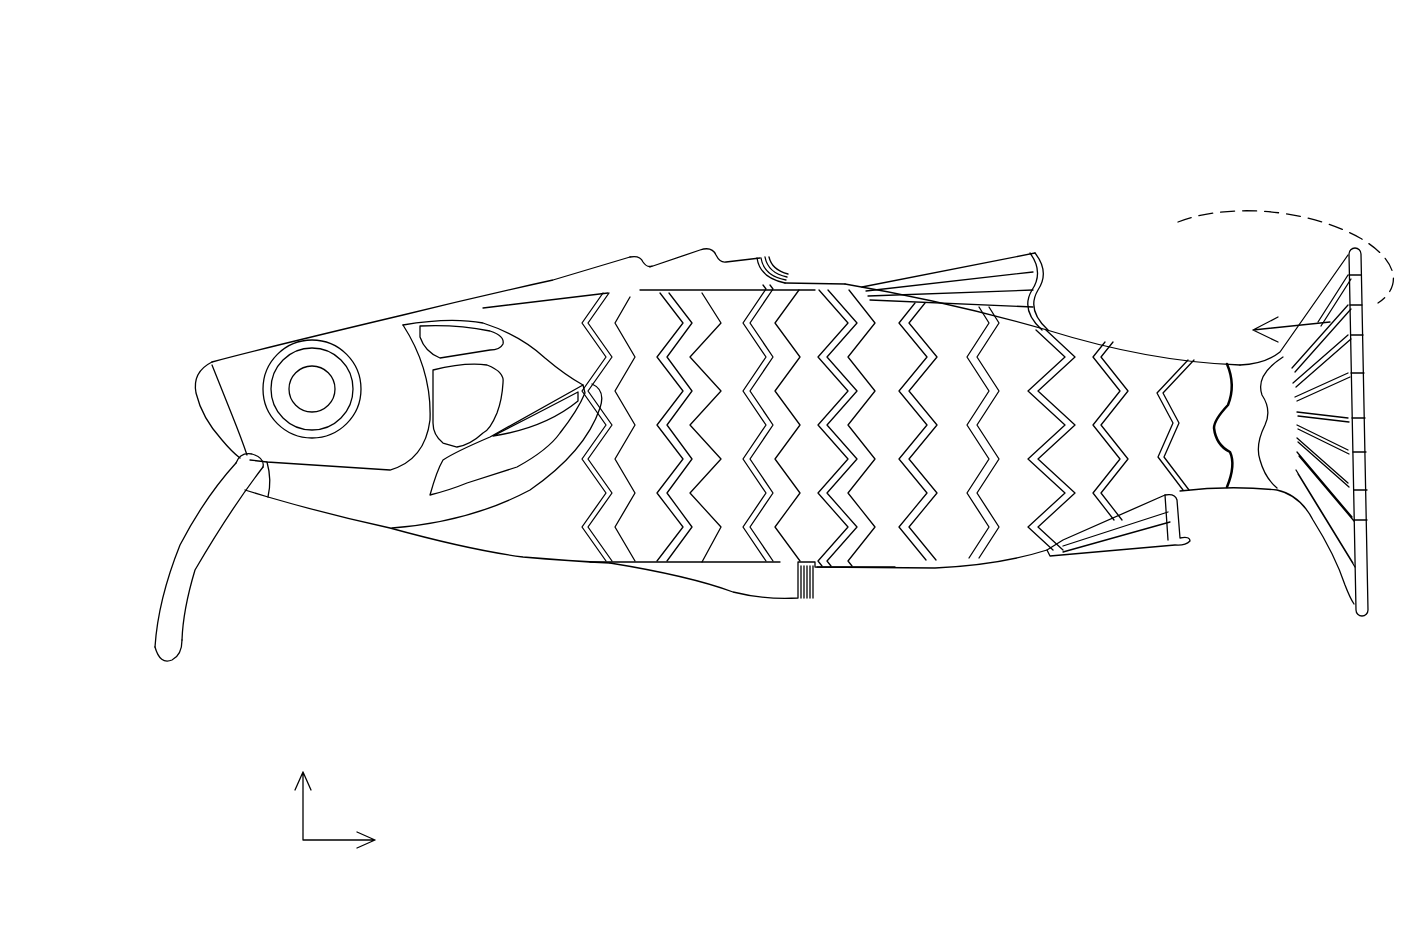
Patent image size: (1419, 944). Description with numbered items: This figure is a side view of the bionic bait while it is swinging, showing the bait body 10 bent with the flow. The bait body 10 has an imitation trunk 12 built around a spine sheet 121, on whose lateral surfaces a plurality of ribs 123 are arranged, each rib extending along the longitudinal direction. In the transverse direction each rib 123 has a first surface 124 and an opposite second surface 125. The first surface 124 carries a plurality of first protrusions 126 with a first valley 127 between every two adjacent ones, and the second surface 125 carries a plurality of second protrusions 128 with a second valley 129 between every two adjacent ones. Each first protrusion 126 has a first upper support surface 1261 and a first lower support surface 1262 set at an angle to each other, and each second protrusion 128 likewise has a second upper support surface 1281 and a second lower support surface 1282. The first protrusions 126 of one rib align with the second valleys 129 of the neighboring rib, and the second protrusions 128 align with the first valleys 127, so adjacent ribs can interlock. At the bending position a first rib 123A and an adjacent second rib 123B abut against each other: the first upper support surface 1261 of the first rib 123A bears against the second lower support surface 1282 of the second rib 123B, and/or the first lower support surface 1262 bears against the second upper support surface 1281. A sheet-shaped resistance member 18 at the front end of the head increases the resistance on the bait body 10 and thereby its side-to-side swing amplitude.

The bait body 10 is at (1228, 80).
The imitation trunk 12 is at (1062, 328).
The resistance member 18 is at (172, 575).
The spine sheet 121 is at (858, 290).
The ribs 123 is at (1266, 415).
The first rib 123A is at (1245, 465).
The second rib 123B is at (1200, 385).
The first surface 124 is at (738, 425).
The second surface 125 is at (840, 480).
The first protrusions 126 is at (788, 162).
The first upper support surface 1261 is at (762, 312).
The first lower support surface 1262 is at (793, 355).
The first valley 127 is at (838, 312).
The second protrusions 128 is at (625, 155).
The second upper support surface 1281 is at (690, 322).
The second lower support surface 1282 is at (680, 337).
The second valley 129 is at (708, 315).